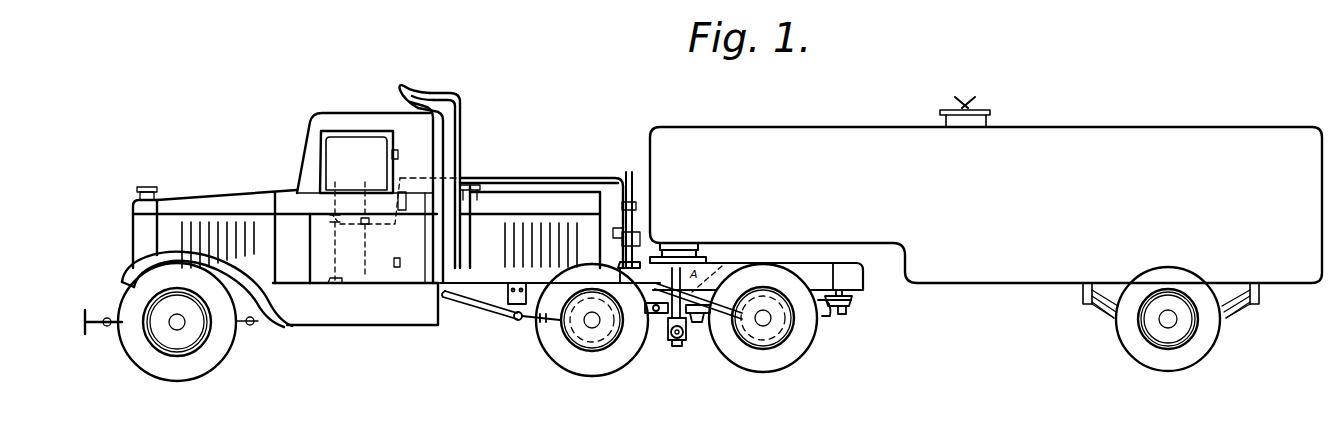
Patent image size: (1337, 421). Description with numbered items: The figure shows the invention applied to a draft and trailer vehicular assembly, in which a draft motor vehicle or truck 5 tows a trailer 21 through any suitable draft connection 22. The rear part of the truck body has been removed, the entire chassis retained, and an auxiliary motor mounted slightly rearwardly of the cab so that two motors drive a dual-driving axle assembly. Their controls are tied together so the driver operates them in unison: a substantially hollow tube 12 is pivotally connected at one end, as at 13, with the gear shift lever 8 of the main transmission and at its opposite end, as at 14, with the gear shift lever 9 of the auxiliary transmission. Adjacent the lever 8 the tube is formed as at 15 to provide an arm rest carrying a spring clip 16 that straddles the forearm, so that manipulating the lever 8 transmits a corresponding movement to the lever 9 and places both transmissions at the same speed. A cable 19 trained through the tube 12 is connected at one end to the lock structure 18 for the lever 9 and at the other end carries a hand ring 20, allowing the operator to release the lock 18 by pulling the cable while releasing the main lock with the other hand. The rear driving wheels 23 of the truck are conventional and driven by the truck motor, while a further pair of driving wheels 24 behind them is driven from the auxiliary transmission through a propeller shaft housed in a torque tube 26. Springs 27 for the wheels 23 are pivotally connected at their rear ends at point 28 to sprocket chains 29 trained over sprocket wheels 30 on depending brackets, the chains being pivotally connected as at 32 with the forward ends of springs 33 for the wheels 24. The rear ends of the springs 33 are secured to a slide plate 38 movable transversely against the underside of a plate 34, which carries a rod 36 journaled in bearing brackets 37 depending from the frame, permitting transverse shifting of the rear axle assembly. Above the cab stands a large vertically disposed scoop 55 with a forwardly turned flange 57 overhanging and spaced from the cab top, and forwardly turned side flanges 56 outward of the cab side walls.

The draft motor vehicle or truck 5 is at (271, 178).
The gear shift lever 8 is at (335, 223).
The spring clip 16 is at (365, 194).
The arm rest 15 is at (370, 228).
The pivotal connection 13 is at (334, 218).
The hand ring 20 is at (412, 220).
The scoop 55 is at (462, 163).
The side flanges 56 is at (462, 130).
The forwardly turned flange 57 is at (429, 96).
The hollow tube 12 is at (551, 177).
The gear shift lever 9 is at (613, 233).
The cable 19 is at (629, 176).
The connection 14 is at (637, 206).
The lock structure 18 is at (640, 236).
The draft connection 22 is at (690, 248).
The bearing brackets 37 is at (843, 291).
The rod 36 is at (834, 262).
The plate 34 is at (858, 298).
The slide plate 38 is at (856, 311).
The springs 33 is at (838, 318).
The torque tube 26 is at (722, 266).
The pivotal connection 32 is at (706, 336).
The sprocket wheels 30 is at (686, 346).
The sprocket chain 29 is at (678, 346).
The springs 27 is at (662, 343).
The driving wheels 23 is at (545, 355).
The pivot point 28 is at (650, 322).
The driving wheels 24 is at (808, 350).
The trailer 21 is at (1066, 126).